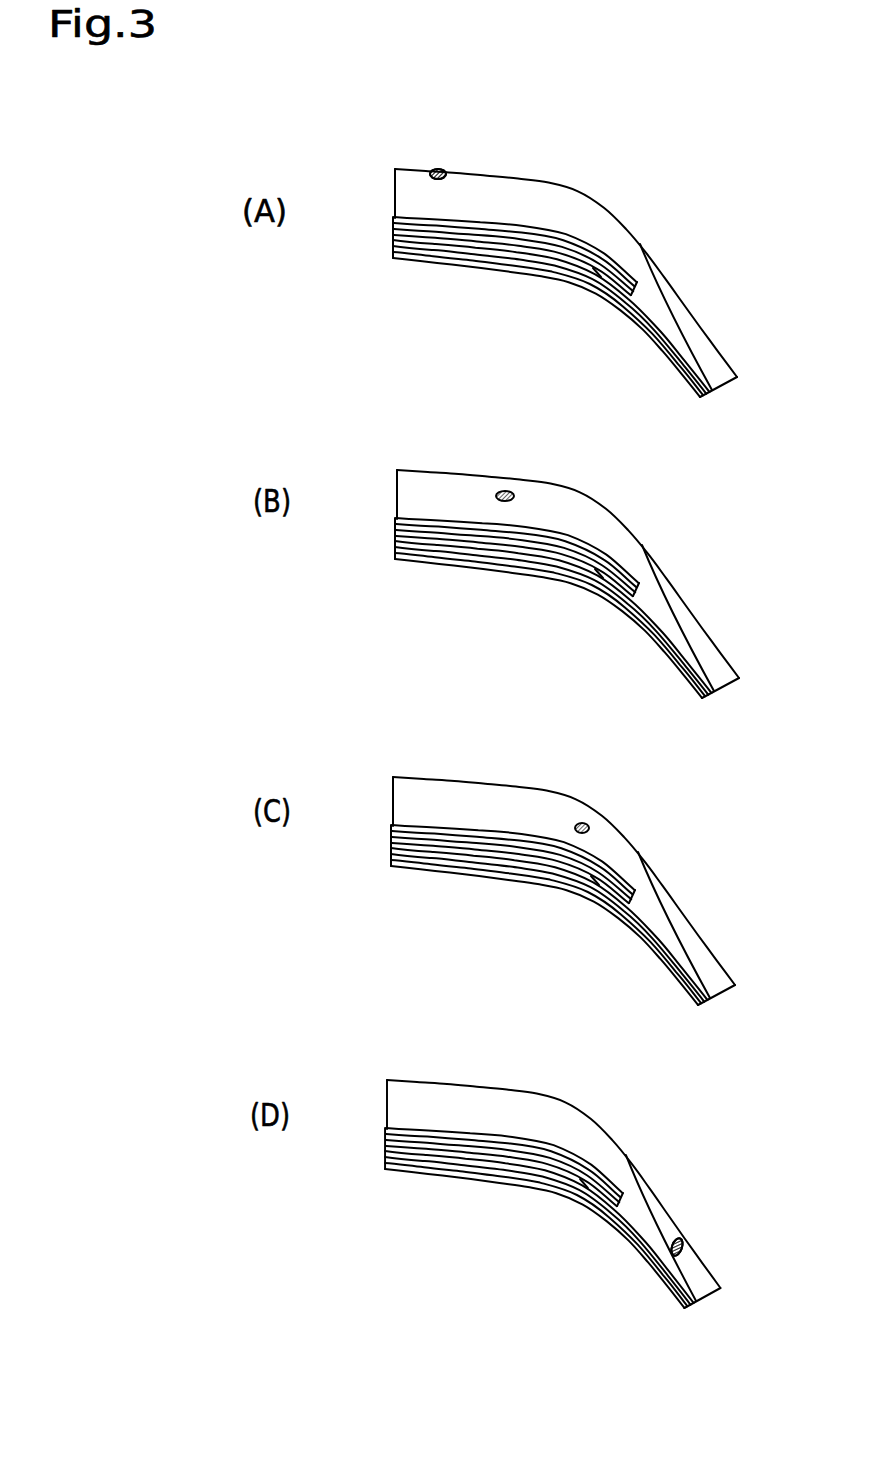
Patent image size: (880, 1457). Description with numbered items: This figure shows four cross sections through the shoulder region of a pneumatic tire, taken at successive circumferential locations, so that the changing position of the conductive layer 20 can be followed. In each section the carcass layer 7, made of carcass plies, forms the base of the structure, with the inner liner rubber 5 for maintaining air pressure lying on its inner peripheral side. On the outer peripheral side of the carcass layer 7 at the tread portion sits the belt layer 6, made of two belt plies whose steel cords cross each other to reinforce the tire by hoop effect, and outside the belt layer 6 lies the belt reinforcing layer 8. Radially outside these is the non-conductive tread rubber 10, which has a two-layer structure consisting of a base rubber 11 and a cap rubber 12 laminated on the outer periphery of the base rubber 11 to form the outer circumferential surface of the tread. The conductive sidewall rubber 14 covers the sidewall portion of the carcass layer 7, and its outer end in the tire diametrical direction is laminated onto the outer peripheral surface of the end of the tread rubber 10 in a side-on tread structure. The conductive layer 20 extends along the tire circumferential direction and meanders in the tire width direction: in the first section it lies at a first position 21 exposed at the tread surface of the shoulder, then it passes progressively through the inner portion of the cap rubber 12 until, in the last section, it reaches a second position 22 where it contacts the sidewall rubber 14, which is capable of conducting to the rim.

The inner liner rubber 5 is at (418, 260).
The belt layer 6 is at (458, 243).
The carcass layer 7 is at (508, 257).
The belt reinforcing layer 8 is at (549, 247).
The tread rubber 10 is at (613, 210).
The base rubber 11 is at (397, 221).
The cap rubber 12 is at (397, 186).
The sidewall rubber 14 is at (718, 352).
The conductive layer 20 is at (441, 168).
The first position 21 is at (477, 151).
The second position 22 is at (733, 1208).